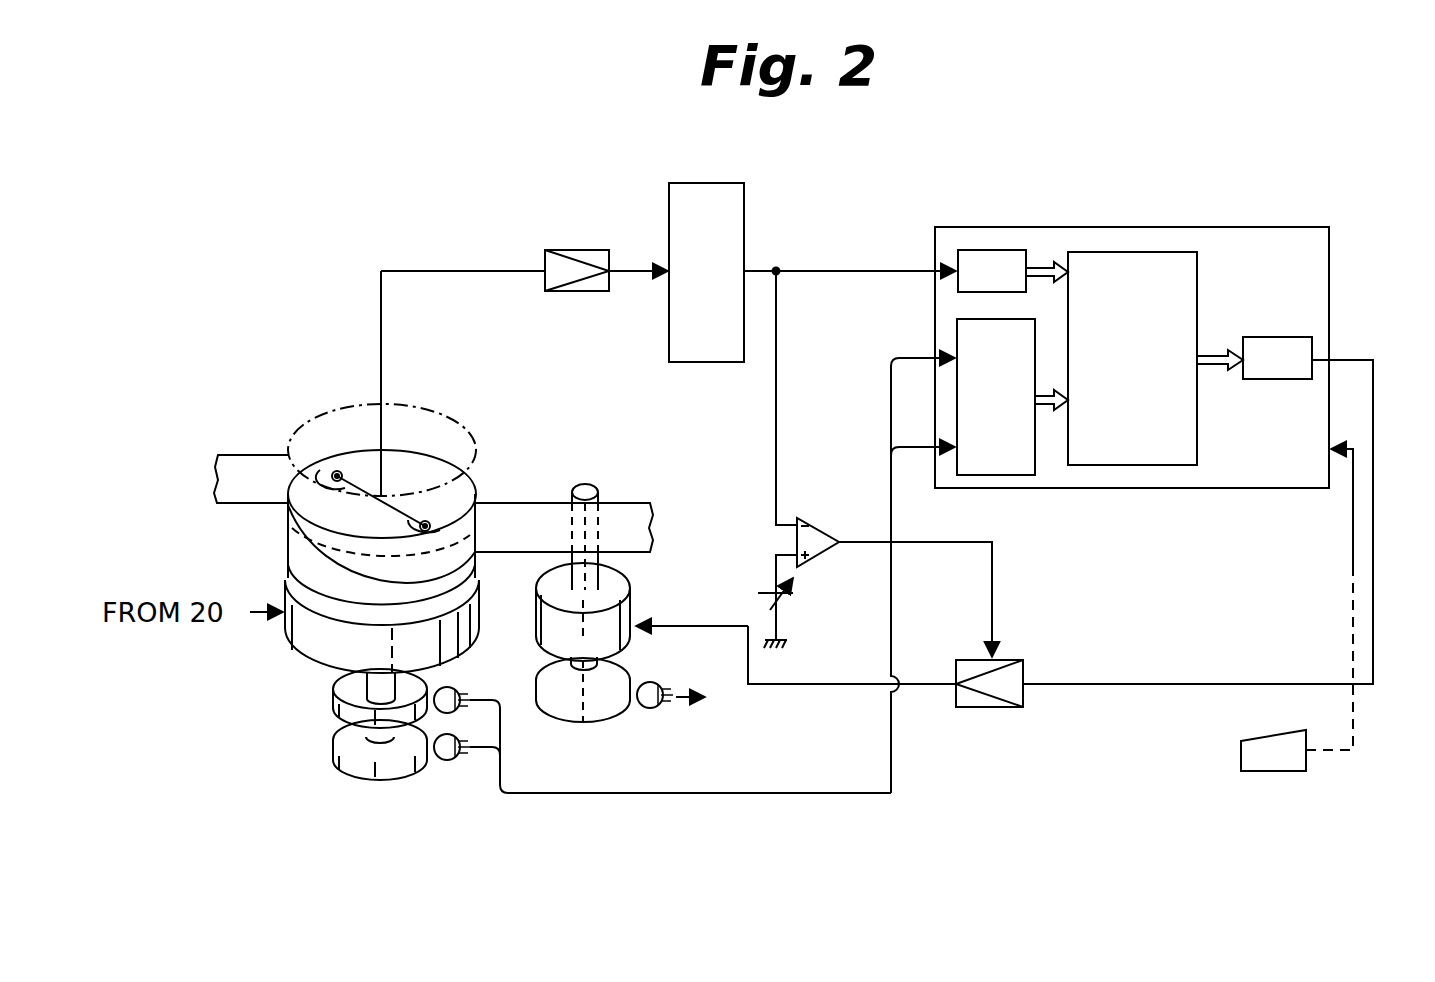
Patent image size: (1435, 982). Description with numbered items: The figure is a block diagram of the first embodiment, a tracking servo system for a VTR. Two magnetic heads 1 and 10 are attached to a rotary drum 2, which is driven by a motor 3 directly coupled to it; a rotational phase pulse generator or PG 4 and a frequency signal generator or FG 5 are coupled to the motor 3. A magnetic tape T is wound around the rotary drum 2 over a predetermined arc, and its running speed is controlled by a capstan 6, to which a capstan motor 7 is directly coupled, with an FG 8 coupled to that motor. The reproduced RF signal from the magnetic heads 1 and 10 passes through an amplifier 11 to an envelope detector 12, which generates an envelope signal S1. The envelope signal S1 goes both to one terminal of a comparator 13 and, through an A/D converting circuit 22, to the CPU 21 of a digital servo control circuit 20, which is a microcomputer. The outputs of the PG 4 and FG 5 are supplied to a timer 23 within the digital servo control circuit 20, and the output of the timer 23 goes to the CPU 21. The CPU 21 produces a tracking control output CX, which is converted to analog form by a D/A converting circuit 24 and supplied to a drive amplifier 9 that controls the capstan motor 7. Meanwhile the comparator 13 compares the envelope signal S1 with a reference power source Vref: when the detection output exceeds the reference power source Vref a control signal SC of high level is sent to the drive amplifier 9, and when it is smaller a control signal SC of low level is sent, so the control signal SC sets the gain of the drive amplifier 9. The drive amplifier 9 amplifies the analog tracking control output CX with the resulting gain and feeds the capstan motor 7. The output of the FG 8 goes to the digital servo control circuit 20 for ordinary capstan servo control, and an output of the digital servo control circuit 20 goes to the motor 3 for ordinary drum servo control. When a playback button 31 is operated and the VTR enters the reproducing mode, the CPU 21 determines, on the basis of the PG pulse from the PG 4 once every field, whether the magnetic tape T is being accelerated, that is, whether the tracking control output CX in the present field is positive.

The magnetic head 1 is at (335, 468).
The rotary drum 2 is at (288, 545).
The motor 3 is at (292, 640).
The rotational phase pulse generator (PG) 4 is at (462, 688).
The frequency signal generator (FG) 5 is at (455, 760).
The capstan 6 is at (598, 488).
The capstan motor 7 is at (634, 584).
The FG 8 is at (652, 712).
The drive amplifier 9 is at (990, 710).
The magnetic head 10 is at (430, 520).
The amplifier 11 is at (573, 292).
The envelope detector 12 is at (694, 363).
The comparator 13 is at (822, 521).
The digital servo control circuit 20 is at (1132, 364).
The CPU 21 is at (1200, 456).
The A/D converting circuit 22 is at (993, 249).
The timer 23 is at (998, 476).
The D/A converting circuit 24 is at (1290, 380).
The playback button 31 is at (1270, 772).
The magnetic tape T is at (525, 503).
The envelope signal S1 is at (768, 268).
The control signal SC is at (994, 578).
The tracking control output CX is at (1216, 352).
The reference power source Vref is at (790, 602).